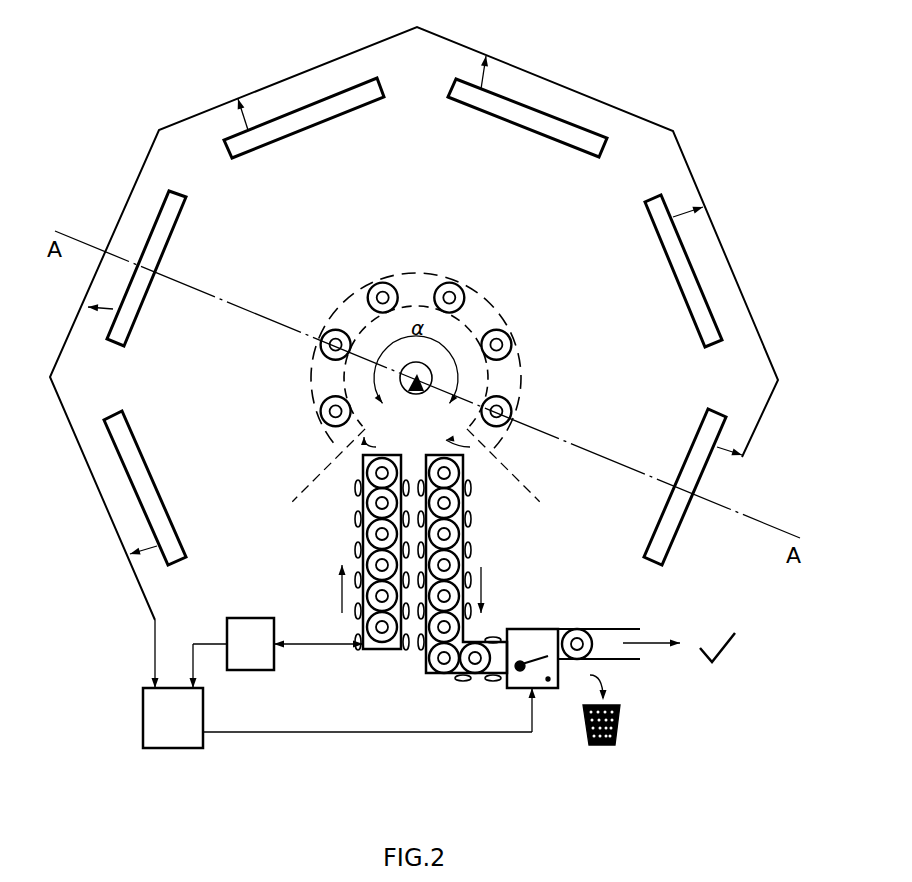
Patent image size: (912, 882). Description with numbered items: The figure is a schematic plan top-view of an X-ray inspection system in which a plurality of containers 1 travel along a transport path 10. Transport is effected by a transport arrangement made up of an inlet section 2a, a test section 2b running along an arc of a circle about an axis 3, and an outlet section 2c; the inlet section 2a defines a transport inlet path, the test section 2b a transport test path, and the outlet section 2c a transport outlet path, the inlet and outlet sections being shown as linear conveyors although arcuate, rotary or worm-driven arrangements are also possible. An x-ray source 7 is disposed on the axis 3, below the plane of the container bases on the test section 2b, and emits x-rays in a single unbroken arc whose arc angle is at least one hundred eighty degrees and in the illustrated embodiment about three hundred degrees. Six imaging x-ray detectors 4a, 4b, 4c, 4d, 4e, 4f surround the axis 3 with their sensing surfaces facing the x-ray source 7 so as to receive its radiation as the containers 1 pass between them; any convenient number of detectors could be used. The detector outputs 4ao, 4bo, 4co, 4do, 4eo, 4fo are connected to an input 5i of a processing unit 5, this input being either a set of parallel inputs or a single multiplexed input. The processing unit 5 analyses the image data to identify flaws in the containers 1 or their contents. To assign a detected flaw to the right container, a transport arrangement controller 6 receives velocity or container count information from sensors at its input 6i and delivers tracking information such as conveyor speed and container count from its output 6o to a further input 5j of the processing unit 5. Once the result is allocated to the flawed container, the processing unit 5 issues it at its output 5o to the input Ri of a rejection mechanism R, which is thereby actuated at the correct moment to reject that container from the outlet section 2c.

The container 1 is at (505, 345).
The inlet section 2a is at (363, 503).
The test section 2b is at (492, 293).
The outlet section 2c is at (463, 558).
The axis 3 is at (420, 376).
The imaging x-ray detector 4a is at (145, 488).
The imaging x-ray detector 4b is at (149, 268).
The imaging x-ray detector 4c is at (304, 119).
The imaging x-ray detector 4d is at (527, 119).
The imaging x-ray detector 4e is at (683, 271).
The imaging x-ray detector 4f is at (684, 487).
The output of imaging x-ray detector 4ao is at (140, 543).
The output of imaging x-ray detector 4bo is at (101, 300).
The output of imaging x-ray detector 4co is at (253, 114).
The output of imaging x-ray detector 4do is at (496, 75).
The output of imaging x-ray detector 4eo is at (686, 204).
The output of imaging x-ray detector 4fo is at (729, 445).
The processing unit 5 is at (162, 733).
The input of processing unit 5i is at (143, 654).
The input of processing unit 5j is at (202, 666).
The output of processing unit 5o is at (367, 719).
The transport arrangement controller 6 is at (239, 657).
The input of transport arrangement controller 6i is at (318, 634).
The output of transport arrangement controller 6o is at (210, 633).
The x-ray source 7 is at (417, 388).
The transport path 10 is at (592, 527).
The rejection mechanism R is at (532, 658).
The input of rejection mechanism Ri is at (542, 710).